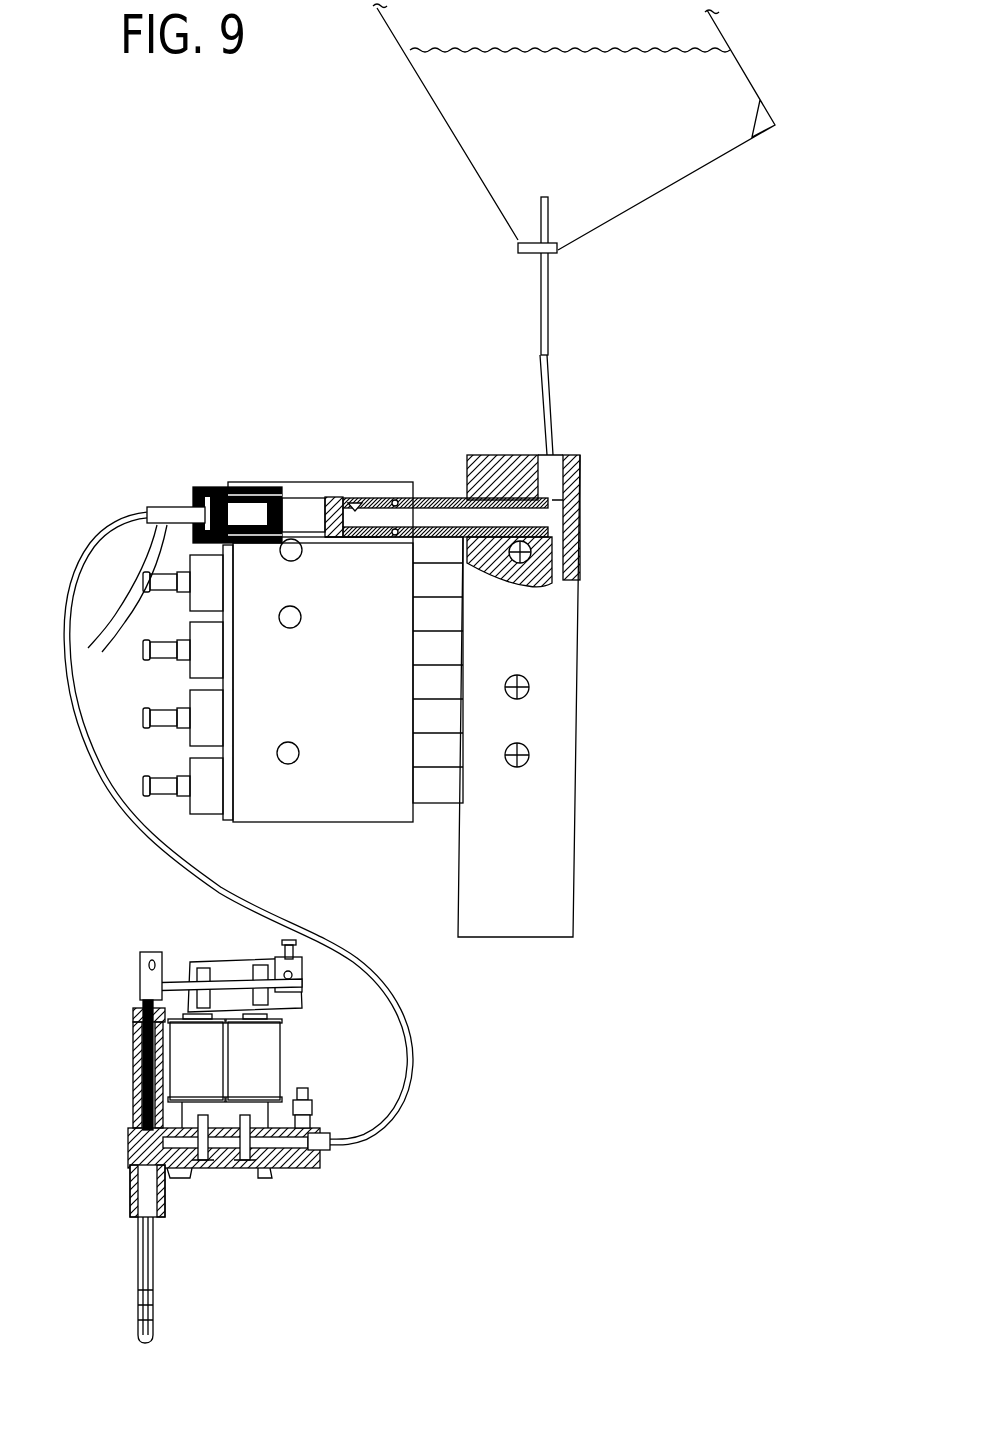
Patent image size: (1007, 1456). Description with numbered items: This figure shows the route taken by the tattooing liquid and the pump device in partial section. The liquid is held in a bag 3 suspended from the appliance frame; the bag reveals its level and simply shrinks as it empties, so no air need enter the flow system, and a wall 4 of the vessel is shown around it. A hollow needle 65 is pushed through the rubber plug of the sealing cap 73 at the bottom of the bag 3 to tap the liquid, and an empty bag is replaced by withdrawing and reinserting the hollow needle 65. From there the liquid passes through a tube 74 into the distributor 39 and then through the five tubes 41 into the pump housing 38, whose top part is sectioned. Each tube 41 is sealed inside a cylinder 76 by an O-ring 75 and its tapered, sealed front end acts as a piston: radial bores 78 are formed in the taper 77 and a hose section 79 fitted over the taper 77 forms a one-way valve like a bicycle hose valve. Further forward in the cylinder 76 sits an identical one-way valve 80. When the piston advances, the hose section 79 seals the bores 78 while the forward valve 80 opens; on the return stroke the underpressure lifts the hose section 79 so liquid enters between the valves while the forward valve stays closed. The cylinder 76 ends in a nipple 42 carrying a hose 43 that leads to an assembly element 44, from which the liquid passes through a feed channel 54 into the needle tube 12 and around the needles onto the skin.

The bag 3 is at (723, 33).
The tank 4 is at (715, 105).
The hollow needle 65 is at (548, 208).
The sealing cap 73 is at (553, 249).
The tube 74 is at (547, 393).
The tube 41 is at (442, 497).
The distributor 39 is at (600, 636).
The pump housing 38 is at (372, 701).
The hose 43 is at (63, 647).
The nipple 42 is at (122, 611).
The cylinder 76 is at (300, 493).
The one-way valve 80 is at (226, 460).
The O-ring 75 is at (397, 502).
The radial bores 78 is at (353, 500).
The hose section 79 is at (327, 540).
The taper 77 is at (362, 538).
The assembly element 44 is at (306, 1181).
The feed channel 54 is at (223, 1140).
The needle tube 12 is at (155, 1287).